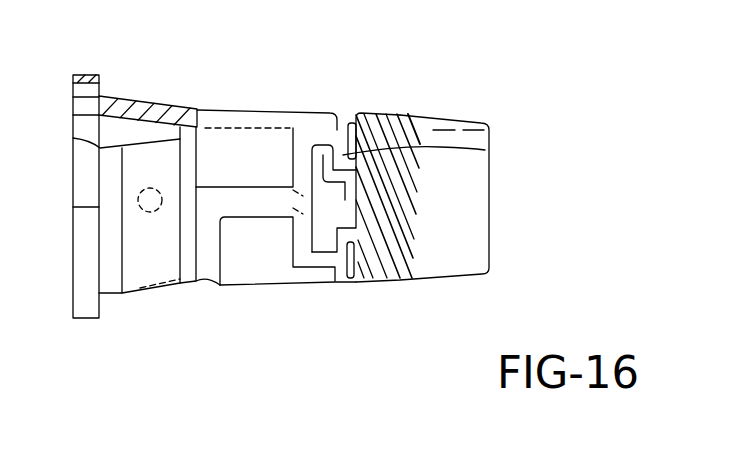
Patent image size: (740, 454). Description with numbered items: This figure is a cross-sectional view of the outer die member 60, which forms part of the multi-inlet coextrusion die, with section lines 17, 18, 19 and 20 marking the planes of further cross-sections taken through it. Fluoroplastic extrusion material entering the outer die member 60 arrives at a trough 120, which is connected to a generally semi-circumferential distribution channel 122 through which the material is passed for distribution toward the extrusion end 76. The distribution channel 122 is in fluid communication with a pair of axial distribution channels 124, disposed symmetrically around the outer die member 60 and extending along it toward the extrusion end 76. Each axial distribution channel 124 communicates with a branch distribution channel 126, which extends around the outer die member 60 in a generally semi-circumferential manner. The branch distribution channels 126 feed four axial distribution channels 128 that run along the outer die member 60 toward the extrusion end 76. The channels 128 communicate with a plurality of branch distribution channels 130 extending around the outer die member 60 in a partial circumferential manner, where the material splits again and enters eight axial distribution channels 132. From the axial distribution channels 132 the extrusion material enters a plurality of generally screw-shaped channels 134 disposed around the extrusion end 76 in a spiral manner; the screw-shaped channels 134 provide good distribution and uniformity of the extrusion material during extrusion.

The trough 120 is at (150, 293).
The semi-circumferential distribution channel 122 is at (220, 290).
The axial distribution channels 124 is at (213, 169).
The branch distribution channels 126 is at (303, 156).
The axial distribution channels 128 is at (385, 180).
The branch distribution channels 130 is at (485, 150).
The axial distribution channels 132 is at (360, 115).
The screw-shaped channels 134 is at (390, 113).
The outer die member 60 is at (228, 111).
The extrusion end 76 is at (483, 275).
The section line 17 is at (342, 87).
The section line 18 is at (362, 105).
The section line 19 is at (302, 115).
The section line 20 is at (205, 102).